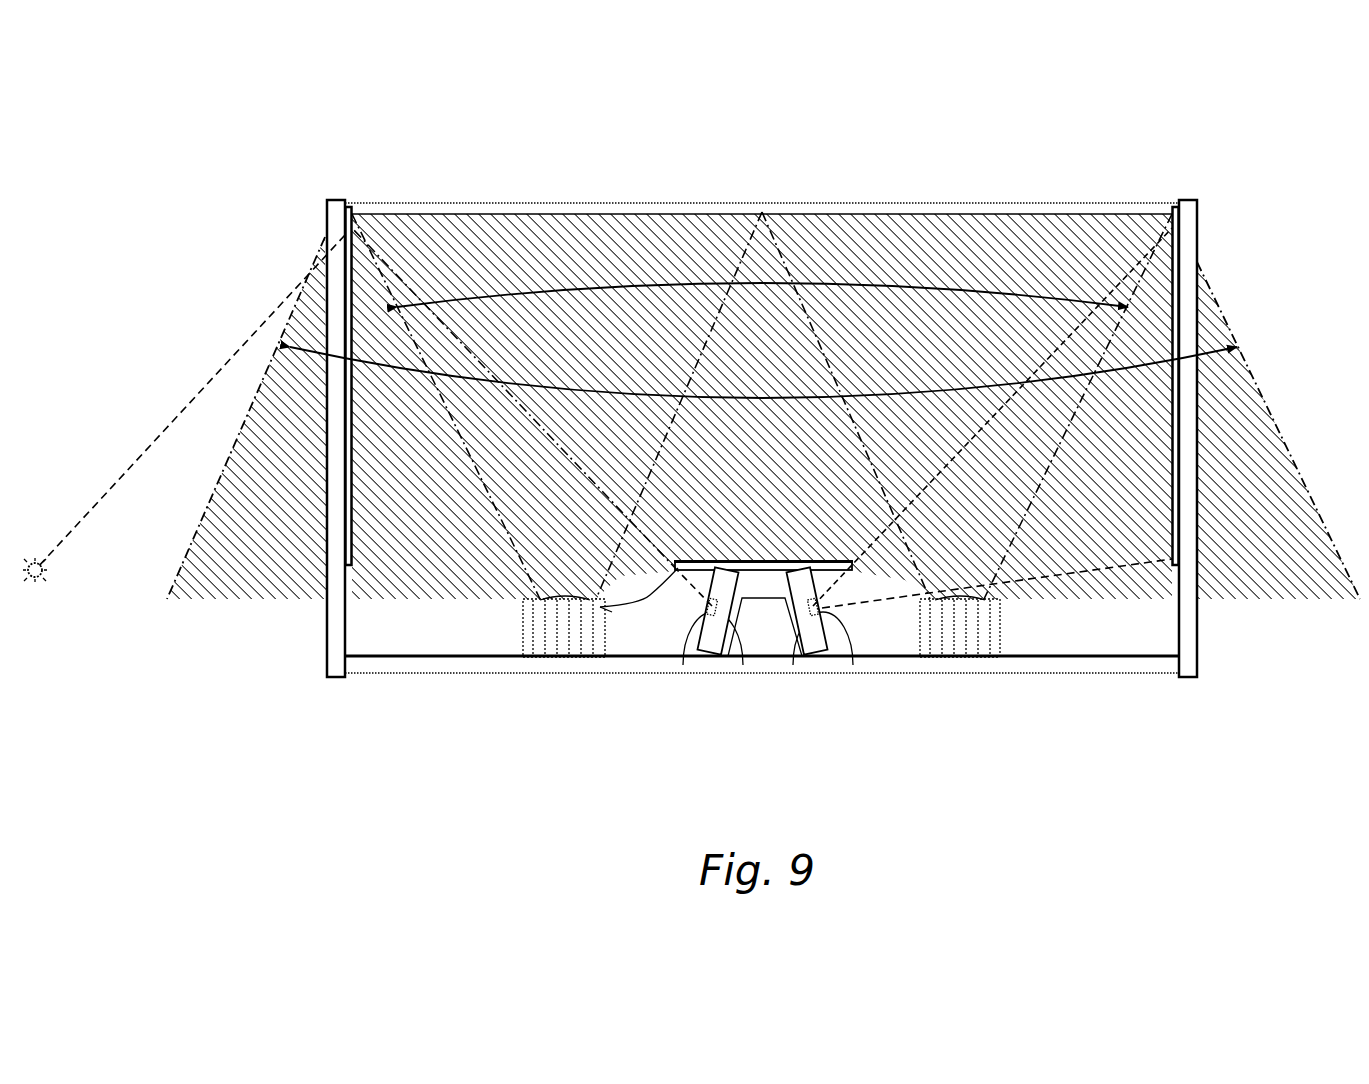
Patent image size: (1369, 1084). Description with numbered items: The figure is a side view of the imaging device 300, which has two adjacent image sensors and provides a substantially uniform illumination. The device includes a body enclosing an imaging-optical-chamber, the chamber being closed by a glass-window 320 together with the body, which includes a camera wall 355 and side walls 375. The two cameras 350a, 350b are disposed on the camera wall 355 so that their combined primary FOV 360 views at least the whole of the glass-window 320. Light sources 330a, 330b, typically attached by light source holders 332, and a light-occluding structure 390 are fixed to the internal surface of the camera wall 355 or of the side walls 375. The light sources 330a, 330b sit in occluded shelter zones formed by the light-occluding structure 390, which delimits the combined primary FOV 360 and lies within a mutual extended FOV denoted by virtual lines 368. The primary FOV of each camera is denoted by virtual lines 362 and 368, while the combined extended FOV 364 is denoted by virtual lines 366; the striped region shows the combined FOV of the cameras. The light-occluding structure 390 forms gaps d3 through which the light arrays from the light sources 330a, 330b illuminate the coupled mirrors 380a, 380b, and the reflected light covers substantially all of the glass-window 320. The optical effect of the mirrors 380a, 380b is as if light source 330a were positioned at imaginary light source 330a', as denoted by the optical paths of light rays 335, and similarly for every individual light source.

The imaging device 300 is at (270, 232).
The glass-window 320 is at (848, 212).
The optical paths of light rays 335 is at (215, 372).
The combined primary FOV 360 is at (762, 301).
The combined extended FOV 364 is at (763, 372).
The virtual lines 366 is at (180, 578).
The virtual lines 368 is at (830, 436).
The mirror 380a is at (352, 488).
The mirror 380b is at (1172, 490).
The light-occluding structure 390 is at (778, 561).
The virtual lines 362 is at (515, 570).
The gap d3 is at (639, 602).
The side walls 375 is at (323, 622).
The camera wall 355 is at (432, 668).
The image sensor 350a is at (560, 657).
The image sensor 350b is at (970, 657).
The light source 330a is at (545, 479).
The light source 330b is at (838, 622).
The light source holder 332 is at (735, 630).
The imaginary light source 330a' is at (75, 611).